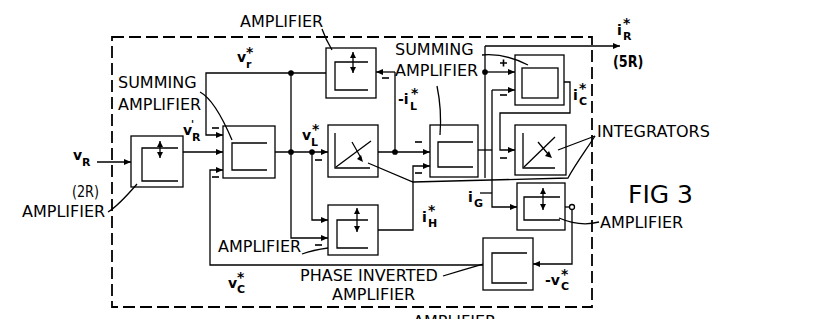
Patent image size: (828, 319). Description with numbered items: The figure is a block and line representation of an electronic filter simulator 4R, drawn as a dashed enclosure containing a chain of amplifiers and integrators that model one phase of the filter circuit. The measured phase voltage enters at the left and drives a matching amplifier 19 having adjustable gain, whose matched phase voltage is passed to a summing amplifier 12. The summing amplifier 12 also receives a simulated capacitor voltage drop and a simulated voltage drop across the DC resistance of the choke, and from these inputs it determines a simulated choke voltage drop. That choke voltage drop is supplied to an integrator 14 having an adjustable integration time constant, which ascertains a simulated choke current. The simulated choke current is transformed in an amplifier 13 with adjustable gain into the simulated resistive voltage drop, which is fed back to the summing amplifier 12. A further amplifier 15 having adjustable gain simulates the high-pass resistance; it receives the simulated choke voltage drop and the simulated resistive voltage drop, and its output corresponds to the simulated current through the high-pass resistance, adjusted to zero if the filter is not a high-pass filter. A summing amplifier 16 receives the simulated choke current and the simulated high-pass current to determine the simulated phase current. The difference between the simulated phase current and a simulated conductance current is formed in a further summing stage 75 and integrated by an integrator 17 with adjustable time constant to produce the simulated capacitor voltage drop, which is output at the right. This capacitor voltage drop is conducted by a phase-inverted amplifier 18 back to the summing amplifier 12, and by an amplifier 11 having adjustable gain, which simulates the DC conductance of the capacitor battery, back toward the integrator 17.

The electronic filter simulator 4R is at (636, 280).
The matching amplifier 19 is at (166, 187).
The summing amplifier 12 is at (262, 178).
The amplifier 13 is at (326, 89).
The integrator 14 is at (352, 125).
The further amplifier 15 is at (380, 218).
The summing amplifier 16 is at (448, 125).
The summing amplifier 75 is at (564, 60).
The integrator 17 is at (566, 130).
The amplifier 11 is at (546, 230).
The phase-inverted amplifier 18 is at (483, 275).